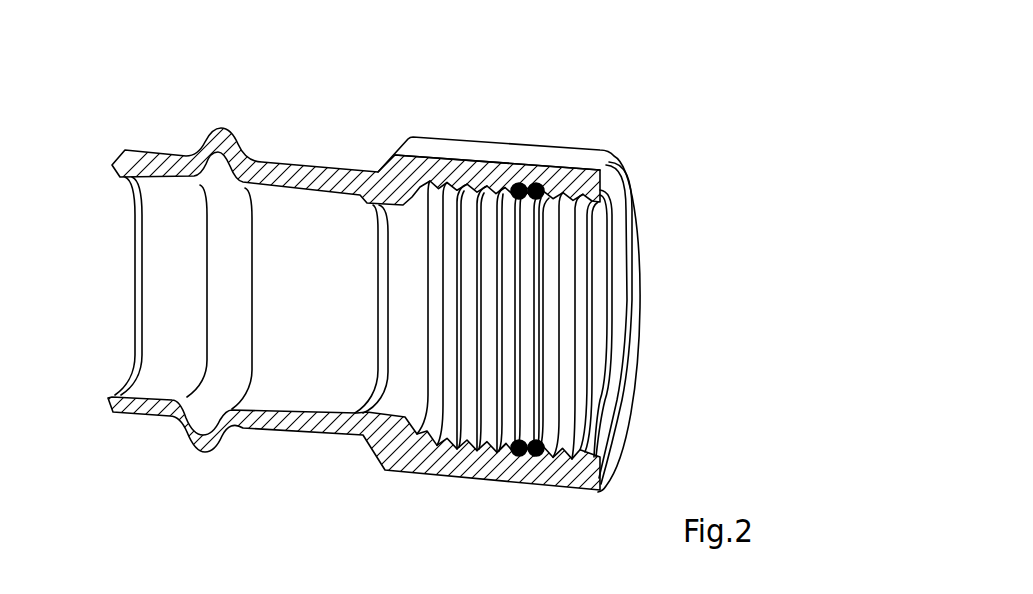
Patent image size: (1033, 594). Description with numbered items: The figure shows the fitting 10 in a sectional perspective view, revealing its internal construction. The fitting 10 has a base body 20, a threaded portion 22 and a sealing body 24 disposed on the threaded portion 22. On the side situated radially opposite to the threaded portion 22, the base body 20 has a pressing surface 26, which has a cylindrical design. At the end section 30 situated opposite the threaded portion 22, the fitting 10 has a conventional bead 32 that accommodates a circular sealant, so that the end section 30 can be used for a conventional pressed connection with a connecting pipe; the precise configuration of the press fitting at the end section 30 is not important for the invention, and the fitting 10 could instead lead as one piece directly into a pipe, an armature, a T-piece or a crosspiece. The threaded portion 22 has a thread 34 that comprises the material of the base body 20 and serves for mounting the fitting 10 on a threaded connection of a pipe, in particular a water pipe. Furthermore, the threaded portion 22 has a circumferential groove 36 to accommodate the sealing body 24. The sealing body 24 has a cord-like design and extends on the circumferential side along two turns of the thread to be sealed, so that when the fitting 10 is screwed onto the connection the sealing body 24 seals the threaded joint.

The fitting 10 is at (680, 126).
The base body 20 is at (445, 128).
The threaded portion 22 is at (577, 177).
The sealing body 24 is at (537, 188).
The pressing surface 26 is at (486, 151).
The end section 30 is at (141, 125).
The bead 32 is at (225, 145).
The thread 34 is at (470, 395).
The circumferential groove 36 is at (530, 457).